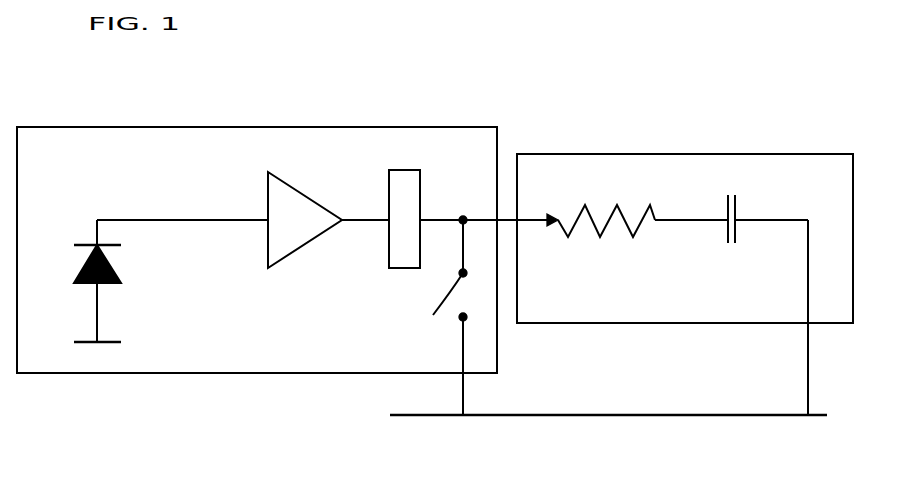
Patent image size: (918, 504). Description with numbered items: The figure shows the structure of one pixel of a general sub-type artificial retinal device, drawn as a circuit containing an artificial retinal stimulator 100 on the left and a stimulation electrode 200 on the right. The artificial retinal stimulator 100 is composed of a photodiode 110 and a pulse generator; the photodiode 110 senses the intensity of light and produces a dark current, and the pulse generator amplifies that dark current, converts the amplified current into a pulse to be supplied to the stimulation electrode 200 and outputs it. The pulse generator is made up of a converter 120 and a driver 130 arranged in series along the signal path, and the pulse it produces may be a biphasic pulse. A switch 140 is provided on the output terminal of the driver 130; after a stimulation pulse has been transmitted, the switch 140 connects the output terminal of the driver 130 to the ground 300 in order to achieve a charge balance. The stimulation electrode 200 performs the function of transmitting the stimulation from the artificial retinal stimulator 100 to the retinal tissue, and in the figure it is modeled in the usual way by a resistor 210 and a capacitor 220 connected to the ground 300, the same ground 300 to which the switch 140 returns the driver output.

The artificial retinal stimulator 100 is at (130, 127).
The photodiode 110 is at (121, 277).
The converter 120 is at (285, 180).
The driver 130 is at (412, 170).
The switch 140 is at (445, 298).
The stimulation electrode 200 is at (678, 154).
The resistor 210 is at (585, 205).
The capacitor 220 is at (733, 205).
The ground 300 is at (660, 415).